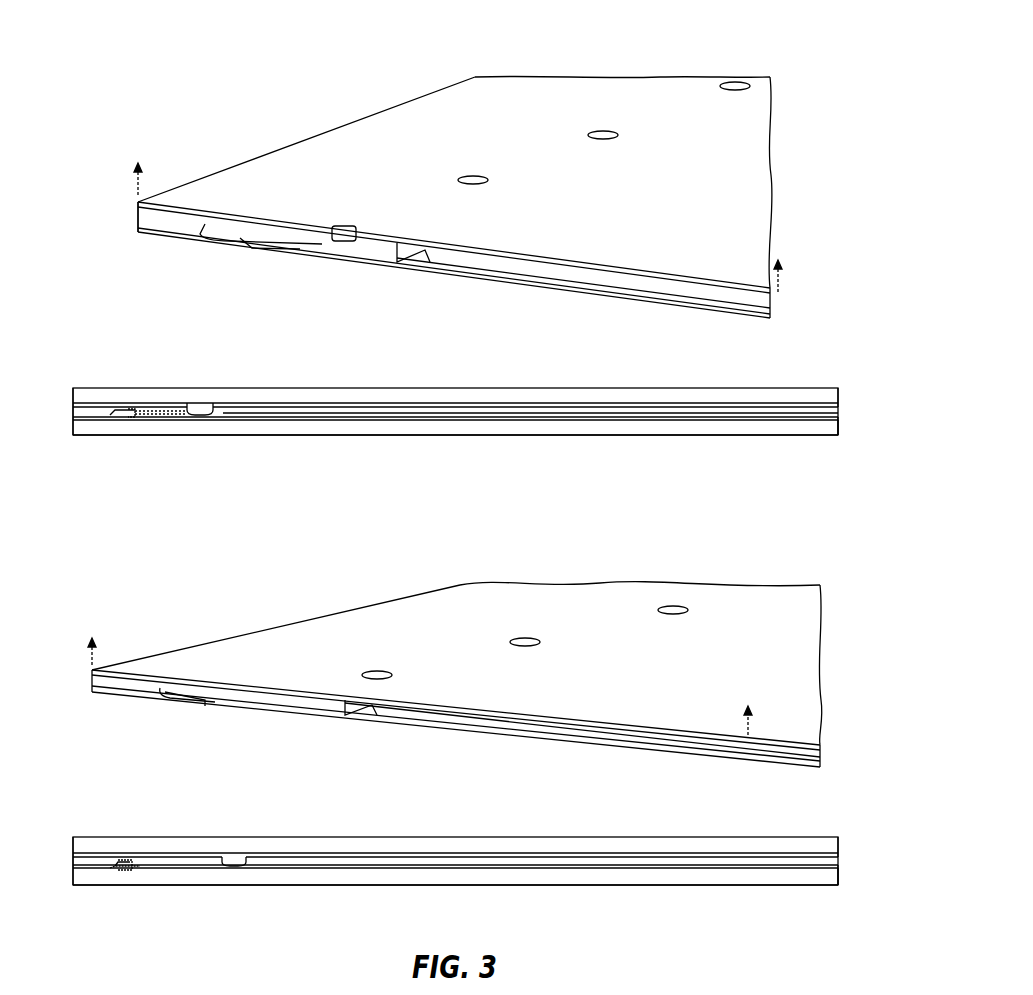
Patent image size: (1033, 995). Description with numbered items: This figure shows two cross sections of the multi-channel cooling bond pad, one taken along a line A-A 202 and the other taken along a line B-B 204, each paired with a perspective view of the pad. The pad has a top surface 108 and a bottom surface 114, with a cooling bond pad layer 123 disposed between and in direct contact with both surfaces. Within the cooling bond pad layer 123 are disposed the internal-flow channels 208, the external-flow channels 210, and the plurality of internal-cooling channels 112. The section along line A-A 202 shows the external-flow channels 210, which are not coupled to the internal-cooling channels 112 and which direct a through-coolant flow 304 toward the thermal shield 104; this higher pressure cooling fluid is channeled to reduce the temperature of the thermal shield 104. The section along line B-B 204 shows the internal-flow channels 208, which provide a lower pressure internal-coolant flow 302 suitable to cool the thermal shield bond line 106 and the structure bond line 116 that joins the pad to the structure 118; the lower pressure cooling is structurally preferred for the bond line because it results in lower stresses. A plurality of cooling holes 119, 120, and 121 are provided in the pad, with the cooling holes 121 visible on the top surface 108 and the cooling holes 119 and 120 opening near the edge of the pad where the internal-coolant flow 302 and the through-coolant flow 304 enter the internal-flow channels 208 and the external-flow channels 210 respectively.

The thermal shield 104 is at (285, 393).
The thermal shield bond line 106 is at (613, 404).
The top surface 108 is at (512, 83).
The internal-cooling channels 112 is at (843, 410).
The bottom surface 114 is at (755, 425).
The structure bond line 116 is at (620, 425).
The structure 118 is at (682, 428).
The cooling hole 119 is at (178, 700).
The cooling hole 120 is at (232, 240).
The cooling hole 121 is at (470, 177).
The cooling bond pad layer 123 is at (142, 217).
The line A-A 202 is at (783, 272).
The line B-B 204 is at (455, 754).
The internal-flow channels 208 is at (202, 695).
The external-flow channels 210 is at (252, 244).
The internal-coolant flow 302 is at (123, 870).
The through-coolant flow 304 is at (123, 418).